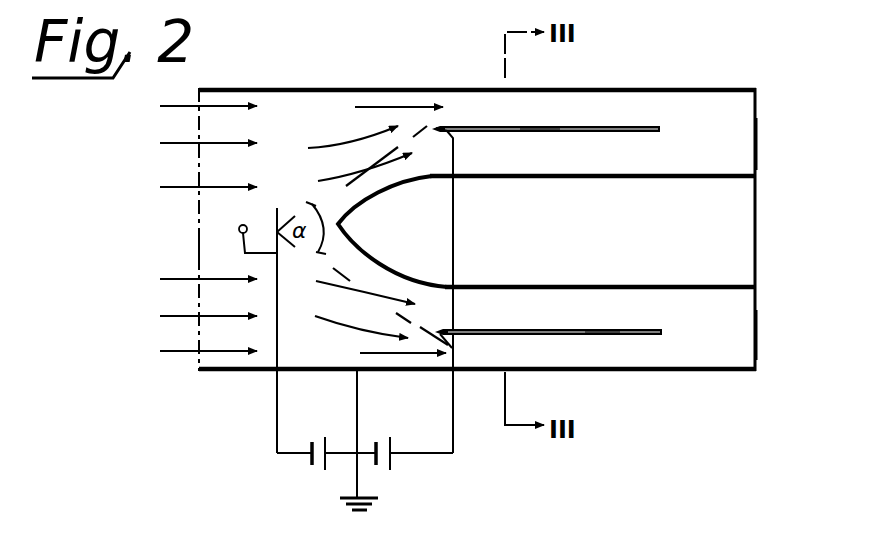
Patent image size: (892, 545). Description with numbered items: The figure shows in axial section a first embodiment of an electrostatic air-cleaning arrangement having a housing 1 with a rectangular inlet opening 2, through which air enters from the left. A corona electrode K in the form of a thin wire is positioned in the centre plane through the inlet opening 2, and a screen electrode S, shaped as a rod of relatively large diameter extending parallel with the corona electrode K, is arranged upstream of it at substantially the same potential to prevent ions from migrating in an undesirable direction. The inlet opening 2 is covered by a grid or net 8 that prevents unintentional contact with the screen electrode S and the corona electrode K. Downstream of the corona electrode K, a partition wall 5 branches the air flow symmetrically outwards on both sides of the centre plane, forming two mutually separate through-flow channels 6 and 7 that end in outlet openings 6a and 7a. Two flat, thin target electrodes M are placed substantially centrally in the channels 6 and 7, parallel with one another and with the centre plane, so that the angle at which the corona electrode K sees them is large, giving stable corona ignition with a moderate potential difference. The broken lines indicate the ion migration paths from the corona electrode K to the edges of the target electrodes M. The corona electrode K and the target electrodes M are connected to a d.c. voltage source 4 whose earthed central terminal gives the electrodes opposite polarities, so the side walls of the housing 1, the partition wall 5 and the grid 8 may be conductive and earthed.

The housing 1 is at (370, 88).
The inlet opening 2 is at (218, 203).
The d.c. voltage source 4 is at (321, 440).
The partition wall 5 is at (383, 189).
The through-flow channel 6 is at (472, 97).
The outlet opening 6a is at (740, 143).
The through-flow channel 7 is at (479, 360).
The outlet opening 7a is at (750, 338).
The grid or net 8 is at (197, 246).
The corona electrode K is at (283, 319).
The screen electrode S is at (240, 233).
The target electrode M is at (535, 127).